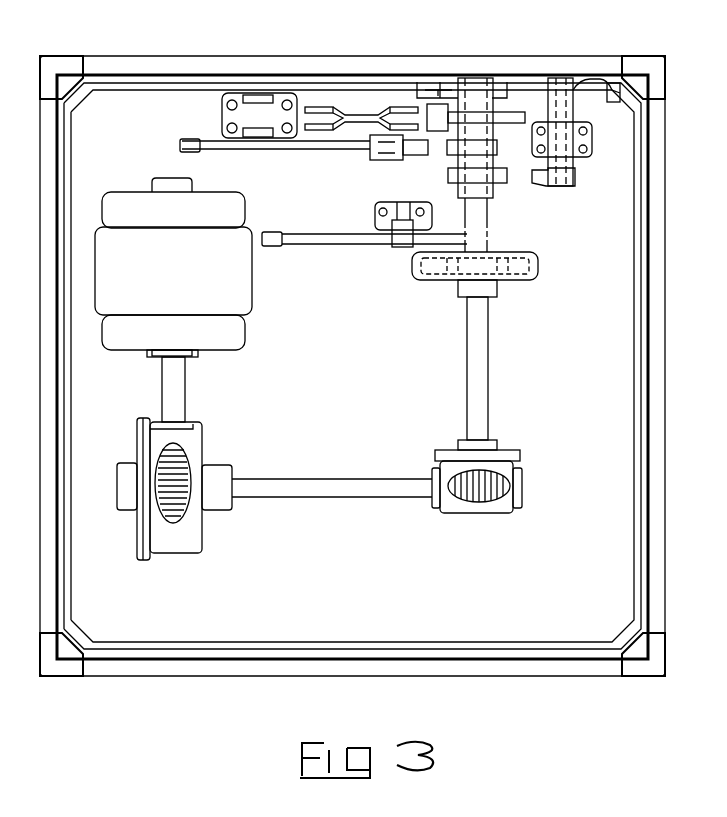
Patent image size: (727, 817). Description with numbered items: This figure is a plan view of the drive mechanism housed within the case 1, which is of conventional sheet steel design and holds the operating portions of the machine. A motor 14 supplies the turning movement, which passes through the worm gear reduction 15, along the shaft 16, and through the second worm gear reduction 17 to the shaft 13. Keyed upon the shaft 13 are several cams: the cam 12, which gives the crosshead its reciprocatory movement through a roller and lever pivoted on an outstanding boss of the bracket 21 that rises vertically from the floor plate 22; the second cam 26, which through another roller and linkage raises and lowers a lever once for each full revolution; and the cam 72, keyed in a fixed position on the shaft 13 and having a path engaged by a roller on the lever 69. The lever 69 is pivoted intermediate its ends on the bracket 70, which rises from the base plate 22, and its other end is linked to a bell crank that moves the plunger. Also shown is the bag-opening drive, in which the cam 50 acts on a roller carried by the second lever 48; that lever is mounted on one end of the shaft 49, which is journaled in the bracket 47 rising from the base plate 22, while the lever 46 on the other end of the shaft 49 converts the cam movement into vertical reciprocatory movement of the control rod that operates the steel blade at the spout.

The case 1 is at (48, 536).
The cam 12 is at (476, 117).
The shaft 13 is at (482, 348).
The motor 14 is at (173, 267).
The worm gear reduction 15 is at (182, 460).
The shaft 16 is at (320, 470).
The worm gear reduction 17 is at (462, 498).
The bracket 21 is at (468, 82).
The floor plate 22 is at (352, 114).
The second cam 26 is at (472, 148).
The lever 46 is at (560, 87).
The bracket 47 is at (592, 144).
The second lever 48 is at (570, 186).
The shaft 49 is at (567, 120).
The cam 50 is at (477, 176).
The lever 69 is at (320, 237).
The bracket 70 is at (382, 201).
The cam 72 is at (540, 265).